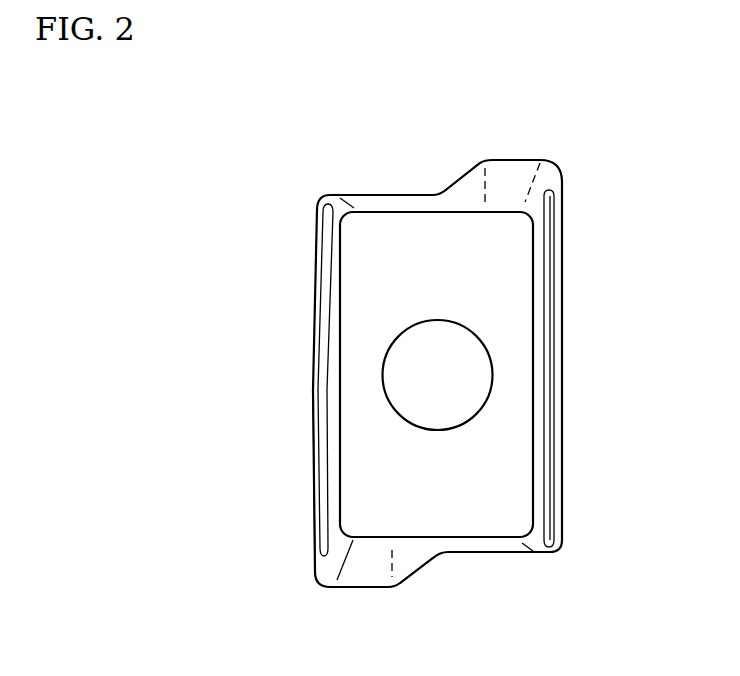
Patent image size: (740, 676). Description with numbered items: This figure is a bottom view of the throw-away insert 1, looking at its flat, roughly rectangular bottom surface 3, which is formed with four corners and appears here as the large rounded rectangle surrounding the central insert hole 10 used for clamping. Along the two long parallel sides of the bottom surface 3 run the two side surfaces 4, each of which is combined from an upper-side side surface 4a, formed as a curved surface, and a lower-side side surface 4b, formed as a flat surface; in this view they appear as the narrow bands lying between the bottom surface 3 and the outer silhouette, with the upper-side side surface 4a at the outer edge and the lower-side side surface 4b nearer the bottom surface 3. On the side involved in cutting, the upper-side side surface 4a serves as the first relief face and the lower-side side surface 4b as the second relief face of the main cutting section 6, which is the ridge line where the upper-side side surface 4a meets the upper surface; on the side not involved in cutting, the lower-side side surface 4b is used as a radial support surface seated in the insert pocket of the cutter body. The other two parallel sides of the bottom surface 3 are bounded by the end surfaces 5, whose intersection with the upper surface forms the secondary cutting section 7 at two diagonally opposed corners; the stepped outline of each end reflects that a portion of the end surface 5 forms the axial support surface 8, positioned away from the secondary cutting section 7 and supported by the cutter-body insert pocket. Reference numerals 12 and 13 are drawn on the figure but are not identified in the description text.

The throw-away insert 1 is at (574, 167).
The bottom surface 3 is at (358, 352).
The side surface 4 is at (637, 235).
The upper-side side surface 4a is at (562, 256).
The lower-side side surface 4b is at (540, 303).
The end surface 5 is at (500, 175).
The main cutting section 6 is at (562, 370).
The secondary cutting section 7 is at (533, 157).
The axial support surface 8 is at (380, 203).
The insert hole 10 is at (482, 392).
The corner portion 12 is at (355, 190).
The sloped portion 13 is at (438, 188).